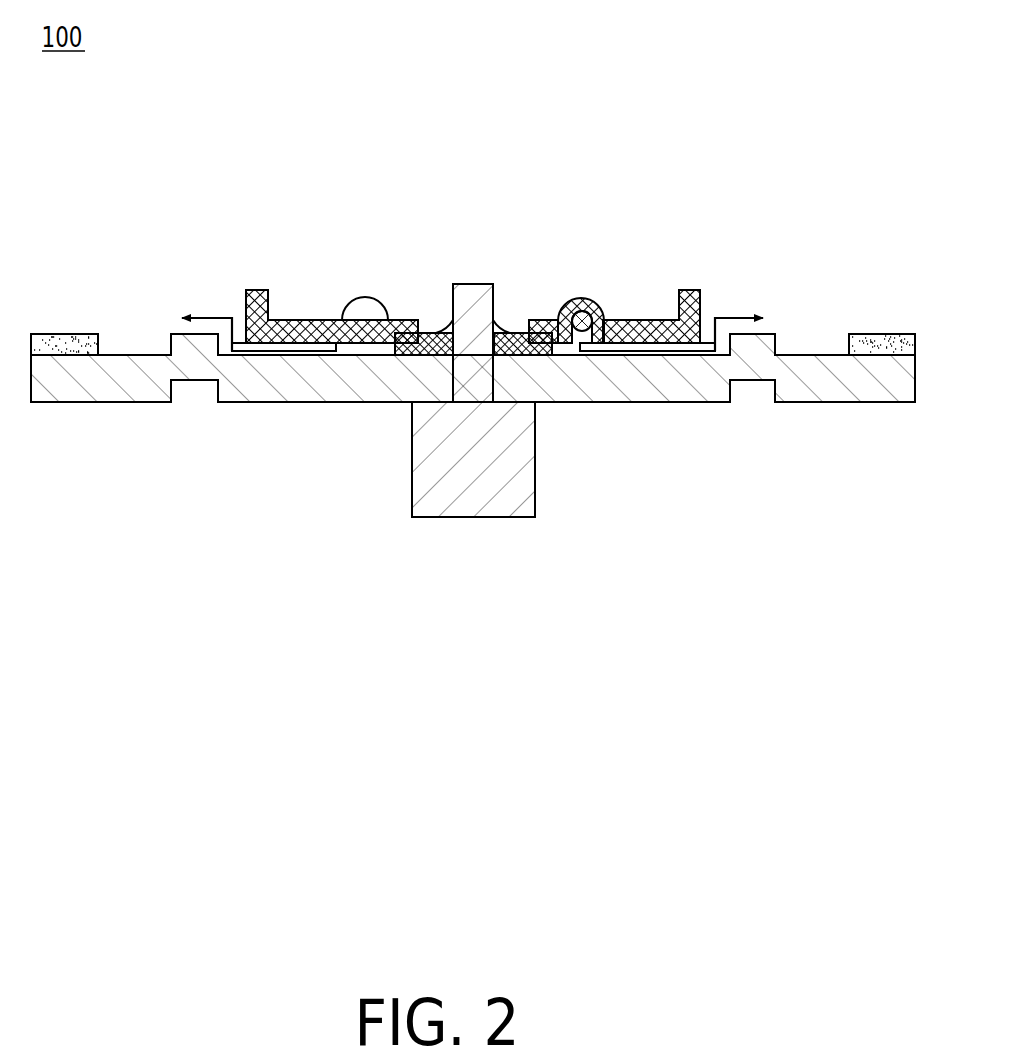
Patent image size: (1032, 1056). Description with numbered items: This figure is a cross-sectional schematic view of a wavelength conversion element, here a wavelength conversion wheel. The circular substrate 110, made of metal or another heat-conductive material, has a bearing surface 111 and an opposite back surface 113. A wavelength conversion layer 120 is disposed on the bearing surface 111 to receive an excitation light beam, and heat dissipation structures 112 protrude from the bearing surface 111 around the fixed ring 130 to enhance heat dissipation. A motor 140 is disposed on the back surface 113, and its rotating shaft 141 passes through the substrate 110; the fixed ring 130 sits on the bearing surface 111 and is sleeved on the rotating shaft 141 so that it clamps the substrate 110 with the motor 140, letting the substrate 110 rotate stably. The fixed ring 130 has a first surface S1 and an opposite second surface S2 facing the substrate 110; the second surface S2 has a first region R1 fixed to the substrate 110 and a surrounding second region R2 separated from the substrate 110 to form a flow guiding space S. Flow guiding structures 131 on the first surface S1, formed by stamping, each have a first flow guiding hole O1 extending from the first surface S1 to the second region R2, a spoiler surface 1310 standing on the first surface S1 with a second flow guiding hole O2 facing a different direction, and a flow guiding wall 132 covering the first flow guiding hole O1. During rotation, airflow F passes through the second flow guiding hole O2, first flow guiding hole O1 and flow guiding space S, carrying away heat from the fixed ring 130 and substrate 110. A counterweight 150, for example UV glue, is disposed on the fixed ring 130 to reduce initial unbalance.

The substrate 110 is at (863, 393).
The bearing surface 111 is at (823, 352).
The heat dissipation structure 112 is at (768, 345).
The back surface 113 is at (656, 402).
The wavelength conversion layer 120 is at (883, 345).
The fixed ring 130 is at (286, 320).
The flow guiding structure 131 is at (688, 168).
The flow guiding wall 132 is at (563, 303).
The spoiler surface 1310 is at (580, 296).
The first flow guiding hole O1 is at (618, 318).
The second flow guiding hole O2 is at (600, 302).
The motor 140 is at (478, 505).
The rotating shaft 141 is at (474, 285).
The counterweight 150 is at (445, 330).
The first region R1 is at (405, 356).
The second region R2 is at (365, 345).
The flow guiding space S is at (570, 348).
The first surface S1 is at (330, 318).
The second surface S2 is at (393, 490).
The airflow F is at (212, 318).